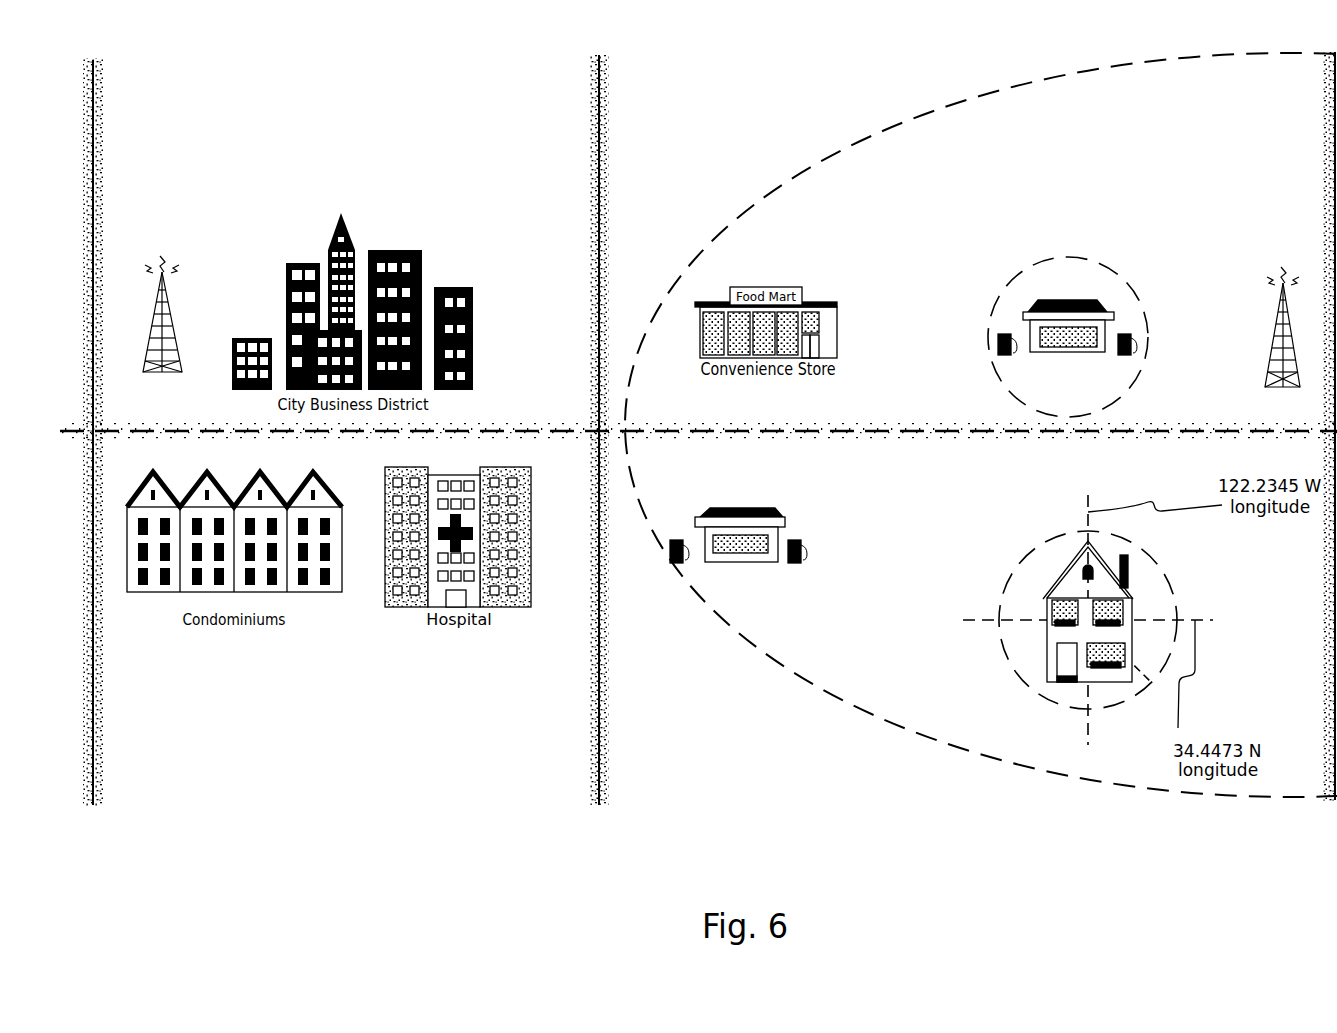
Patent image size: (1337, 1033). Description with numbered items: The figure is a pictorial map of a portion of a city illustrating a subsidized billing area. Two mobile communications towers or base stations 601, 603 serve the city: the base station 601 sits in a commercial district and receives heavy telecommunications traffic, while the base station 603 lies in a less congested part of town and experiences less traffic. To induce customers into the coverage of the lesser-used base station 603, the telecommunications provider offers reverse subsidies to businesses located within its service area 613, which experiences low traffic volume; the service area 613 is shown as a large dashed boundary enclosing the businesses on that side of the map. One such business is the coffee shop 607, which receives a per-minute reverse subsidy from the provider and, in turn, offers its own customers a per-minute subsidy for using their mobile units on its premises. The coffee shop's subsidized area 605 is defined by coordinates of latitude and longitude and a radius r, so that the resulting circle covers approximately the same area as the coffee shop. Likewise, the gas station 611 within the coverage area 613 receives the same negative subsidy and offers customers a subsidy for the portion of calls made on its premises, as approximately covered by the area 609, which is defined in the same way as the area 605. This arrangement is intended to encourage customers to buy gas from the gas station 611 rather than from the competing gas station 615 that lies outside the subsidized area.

The mobile communications tower or base station 601 is at (162, 329).
The base station 603 is at (1282, 340).
The subsidized area 605 is at (1053, 703).
The coffee shop 607 is at (1033, 657).
The area 609 is at (1136, 288).
The gas station 611 is at (1067, 348).
The service area 613 is at (783, 670).
The gas station 615 is at (738, 555).
The radius r is at (1140, 678).